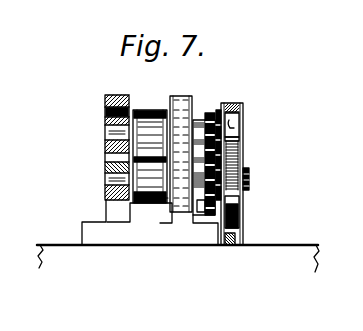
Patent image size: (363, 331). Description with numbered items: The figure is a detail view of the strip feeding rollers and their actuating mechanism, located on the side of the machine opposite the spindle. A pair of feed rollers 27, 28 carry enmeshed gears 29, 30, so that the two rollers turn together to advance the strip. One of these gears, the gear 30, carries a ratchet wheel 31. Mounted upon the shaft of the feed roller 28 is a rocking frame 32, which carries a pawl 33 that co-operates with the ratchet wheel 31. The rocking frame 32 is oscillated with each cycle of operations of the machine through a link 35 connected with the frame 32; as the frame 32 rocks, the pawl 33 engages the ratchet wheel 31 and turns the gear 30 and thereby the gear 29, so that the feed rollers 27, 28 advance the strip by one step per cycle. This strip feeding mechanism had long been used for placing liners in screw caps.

The feed roller 27 is at (151, 114).
The feed roller 28 is at (147, 203).
The gear 29 is at (230, 128).
The gear 30 is at (222, 177).
The ratchet wheel 31 is at (232, 213).
The rocking frame 32 is at (243, 104).
The pawl 33 is at (232, 139).
The link 35 is at (235, 236).